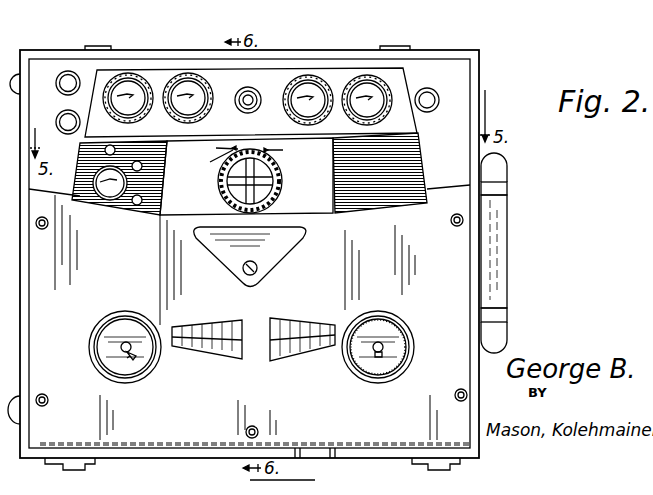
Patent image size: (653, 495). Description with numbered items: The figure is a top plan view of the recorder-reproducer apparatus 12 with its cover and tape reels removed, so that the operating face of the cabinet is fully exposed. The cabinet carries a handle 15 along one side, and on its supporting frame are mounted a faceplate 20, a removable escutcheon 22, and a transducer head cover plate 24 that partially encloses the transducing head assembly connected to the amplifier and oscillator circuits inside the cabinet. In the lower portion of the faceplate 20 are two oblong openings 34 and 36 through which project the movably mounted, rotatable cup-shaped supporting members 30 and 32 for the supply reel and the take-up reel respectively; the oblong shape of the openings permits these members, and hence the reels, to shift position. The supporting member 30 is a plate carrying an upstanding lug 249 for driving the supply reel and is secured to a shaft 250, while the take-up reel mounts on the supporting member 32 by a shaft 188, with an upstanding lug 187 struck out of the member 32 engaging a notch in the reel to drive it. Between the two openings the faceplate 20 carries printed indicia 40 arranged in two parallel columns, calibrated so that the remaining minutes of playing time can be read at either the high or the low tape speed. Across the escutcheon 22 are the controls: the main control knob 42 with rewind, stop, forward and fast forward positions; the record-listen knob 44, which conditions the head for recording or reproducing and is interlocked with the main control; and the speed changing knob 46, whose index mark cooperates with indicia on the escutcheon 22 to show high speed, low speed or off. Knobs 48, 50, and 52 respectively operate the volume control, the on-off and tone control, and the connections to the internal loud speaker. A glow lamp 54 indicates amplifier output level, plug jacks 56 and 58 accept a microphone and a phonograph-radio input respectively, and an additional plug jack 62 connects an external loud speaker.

The recorder-reproducer apparatus 12 is at (510, 80).
The handle 15 is at (497, 226).
The faceplate 20 is at (326, 458).
The removable escutcheon 22 is at (340, 76).
The transducer head cover plate 24 is at (215, 234).
The cup-shaped supporting member 30 is at (95, 338).
The cup-shaped supporting member 32 is at (404, 333).
The oblong opening 34 is at (125, 311).
The oblong opening 36 is at (385, 315).
The indicia 40 is at (218, 363).
The main control knob 42 is at (232, 183).
The record-listen knob 44 is at (188, 90).
The speed changing knob 46 is at (112, 195).
The volume control knob 48 is at (128, 90).
The on-off and tone control knob 50 is at (308, 90).
The speaker control knob 52 is at (366, 88).
The glow lamp 54 is at (250, 92).
The plug jack 56 is at (70, 133).
The plug jack 58 is at (68, 71).
The plug jack 62 is at (436, 92).
The upstanding lug 187 is at (376, 354).
The shaft 188 is at (402, 349).
The upstanding lug 249 is at (133, 362).
The shaft 250 is at (121, 351).